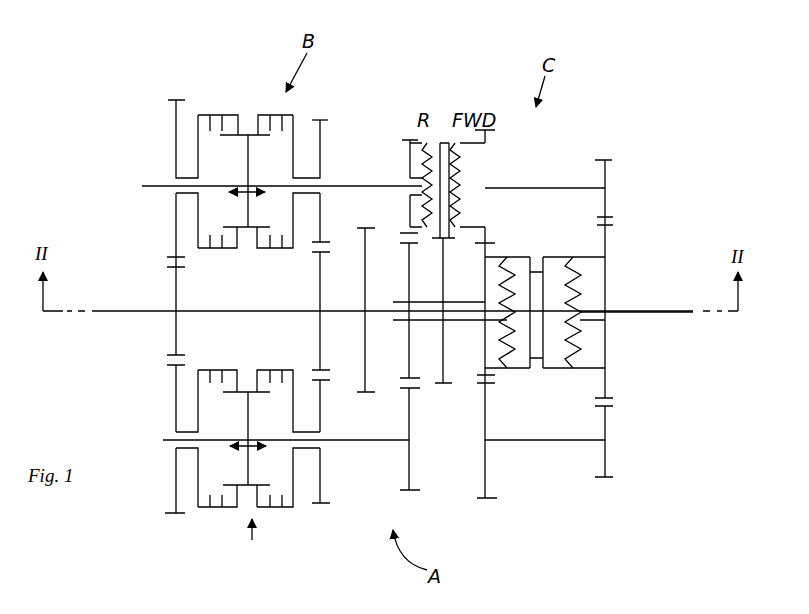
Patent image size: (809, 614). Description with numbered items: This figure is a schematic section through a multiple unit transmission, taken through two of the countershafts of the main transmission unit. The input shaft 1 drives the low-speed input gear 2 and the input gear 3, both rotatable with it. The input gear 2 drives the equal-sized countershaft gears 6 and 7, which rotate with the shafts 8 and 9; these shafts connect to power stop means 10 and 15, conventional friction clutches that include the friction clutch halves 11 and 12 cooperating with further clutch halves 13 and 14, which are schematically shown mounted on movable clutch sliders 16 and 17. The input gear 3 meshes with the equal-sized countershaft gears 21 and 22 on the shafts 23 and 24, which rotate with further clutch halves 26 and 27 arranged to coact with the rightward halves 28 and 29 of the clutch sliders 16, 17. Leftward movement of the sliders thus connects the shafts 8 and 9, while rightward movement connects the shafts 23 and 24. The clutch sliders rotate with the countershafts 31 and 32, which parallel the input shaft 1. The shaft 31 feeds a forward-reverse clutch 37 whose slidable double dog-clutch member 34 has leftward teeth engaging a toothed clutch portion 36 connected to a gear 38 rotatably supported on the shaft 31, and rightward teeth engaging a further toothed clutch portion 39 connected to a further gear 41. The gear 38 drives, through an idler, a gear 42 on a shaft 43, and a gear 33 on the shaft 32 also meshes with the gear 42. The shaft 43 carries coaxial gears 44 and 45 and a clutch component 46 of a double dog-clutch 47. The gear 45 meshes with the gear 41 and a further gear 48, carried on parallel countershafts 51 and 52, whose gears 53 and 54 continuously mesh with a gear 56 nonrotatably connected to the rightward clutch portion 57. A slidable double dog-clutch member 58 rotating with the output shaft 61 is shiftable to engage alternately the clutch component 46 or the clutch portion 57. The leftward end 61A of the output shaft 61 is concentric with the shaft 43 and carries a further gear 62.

The input shaft 1 is at (117, 312).
The low-speed input gear 2 is at (176, 292).
The input gear 3 is at (320, 273).
The countershaft gear 6 is at (176, 118).
The countershaft gear 7 is at (176, 395).
The shaft 8 is at (183, 177).
The shaft 9 is at (187, 432).
The power stop means 10 is at (258, 95).
The friction clutch half 11 is at (198, 155).
The friction clutch half 12 is at (202, 465).
The clutch half 13 is at (222, 132).
The clutch half 14 is at (221, 387).
The power stop means 15 is at (236, 541).
The clutch slider 16 is at (248, 168).
The clutch slider 17 is at (250, 427).
The countershaft gear 21 is at (320, 242).
The countershaft gear 22 is at (322, 477).
The shaft 23 is at (308, 177).
The shaft 24 is at (308, 430).
The clutch half 26 is at (293, 158).
The clutch half 27 is at (293, 500).
The rightward half of clutch slider 28 is at (272, 235).
The rightward half of clutch slider 29 is at (272, 495).
The countershaft 31 is at (345, 186).
The countershaft 32 is at (350, 440).
The gear 33 is at (410, 475).
The double dog-clutch member 34 is at (441, 150).
The toothed clutch portion 36 is at (410, 173).
The forward-reverse clutch 37 is at (437, 114).
The gear 38 is at (405, 138).
The toothed clutch portion 39 is at (475, 155).
The gear 41 is at (487, 130).
The gear 42 is at (408, 273).
The shaft 43 is at (418, 302).
The gear 44 is at (442, 272).
The gear 45 is at (483, 273).
The clutch component 46 is at (508, 255).
The double dog-clutch 47 is at (539, 238).
The gear 48 is at (487, 473).
The countershaft 51 is at (538, 188).
The countershaft 52 is at (552, 442).
The gear 53 is at (605, 202).
The gear 54 is at (605, 418).
The gear 56 is at (605, 382).
The rightward clutch portion 57 is at (585, 255).
The double dog-clutch member 58 is at (553, 270).
The output shaft 61 is at (652, 312).
The leftward end of output shaft 61A is at (473, 312).
The gear 62 is at (367, 243).